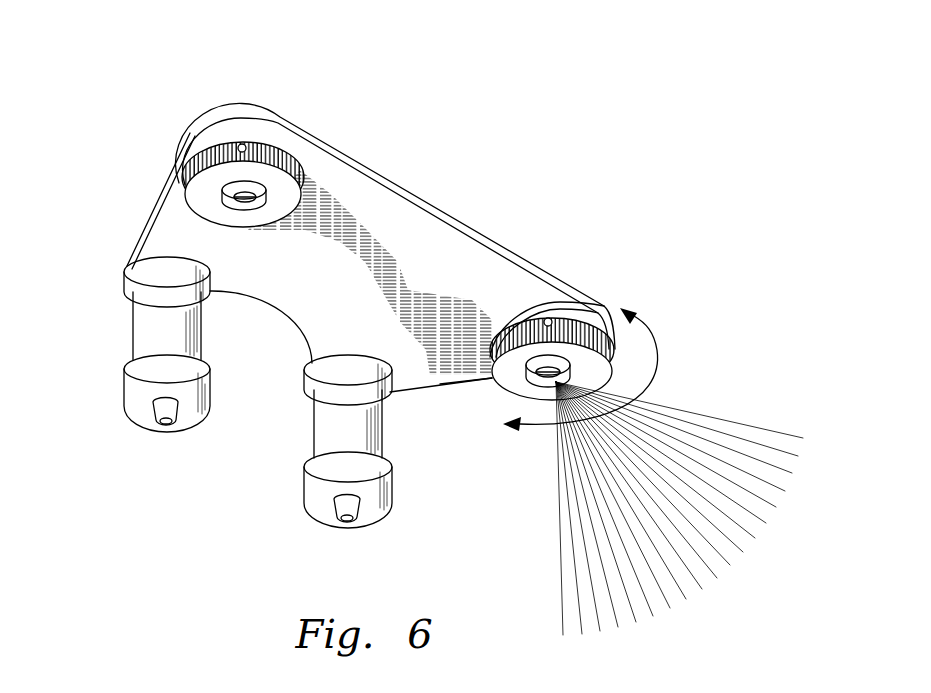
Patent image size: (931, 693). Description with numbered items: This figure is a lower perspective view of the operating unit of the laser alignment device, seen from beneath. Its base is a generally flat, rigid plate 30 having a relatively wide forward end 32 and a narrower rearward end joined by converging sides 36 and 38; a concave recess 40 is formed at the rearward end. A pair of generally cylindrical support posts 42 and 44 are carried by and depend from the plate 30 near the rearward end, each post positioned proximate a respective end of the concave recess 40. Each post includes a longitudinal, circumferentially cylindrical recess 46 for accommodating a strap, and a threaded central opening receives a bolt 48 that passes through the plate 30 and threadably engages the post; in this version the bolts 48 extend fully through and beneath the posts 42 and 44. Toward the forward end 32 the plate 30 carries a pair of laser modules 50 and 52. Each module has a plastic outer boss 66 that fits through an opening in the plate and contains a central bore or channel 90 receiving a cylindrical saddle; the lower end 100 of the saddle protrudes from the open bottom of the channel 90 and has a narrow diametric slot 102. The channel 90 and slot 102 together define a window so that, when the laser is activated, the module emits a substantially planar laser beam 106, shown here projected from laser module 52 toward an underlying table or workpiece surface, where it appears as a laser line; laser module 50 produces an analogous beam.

The plate 30 is at (408, 390).
The forward end 32 is at (468, 227).
The converging side 36 is at (165, 183).
The converging side 38 is at (463, 384).
The concave recess 40 is at (254, 299).
The support post 42 is at (123, 390).
The support post 44 is at (393, 485).
The cylindrical recess 46 is at (133, 333).
The bolt 48 is at (164, 426).
The laser module 50 is at (234, 175).
The laser module 52 is at (590, 353).
The outer boss 66 is at (200, 143).
The central bore or channel 90 is at (226, 192).
The lower end of saddle 100 is at (237, 208).
The diametric slot 102 is at (255, 183).
The planar laser beam 106 is at (603, 512).